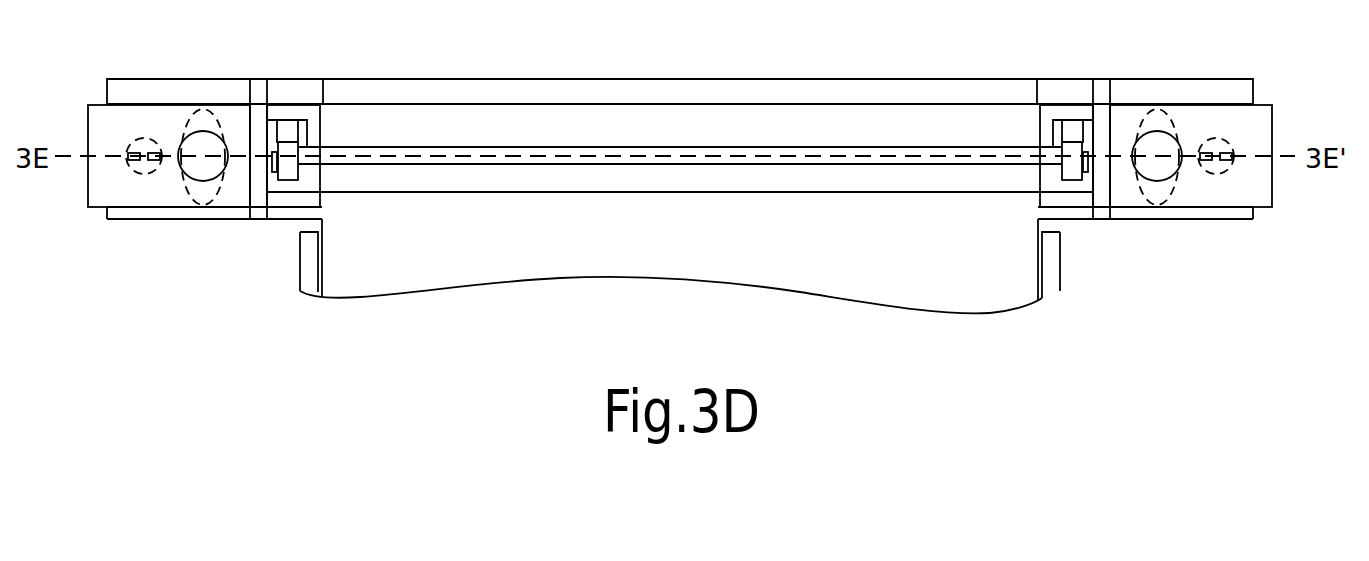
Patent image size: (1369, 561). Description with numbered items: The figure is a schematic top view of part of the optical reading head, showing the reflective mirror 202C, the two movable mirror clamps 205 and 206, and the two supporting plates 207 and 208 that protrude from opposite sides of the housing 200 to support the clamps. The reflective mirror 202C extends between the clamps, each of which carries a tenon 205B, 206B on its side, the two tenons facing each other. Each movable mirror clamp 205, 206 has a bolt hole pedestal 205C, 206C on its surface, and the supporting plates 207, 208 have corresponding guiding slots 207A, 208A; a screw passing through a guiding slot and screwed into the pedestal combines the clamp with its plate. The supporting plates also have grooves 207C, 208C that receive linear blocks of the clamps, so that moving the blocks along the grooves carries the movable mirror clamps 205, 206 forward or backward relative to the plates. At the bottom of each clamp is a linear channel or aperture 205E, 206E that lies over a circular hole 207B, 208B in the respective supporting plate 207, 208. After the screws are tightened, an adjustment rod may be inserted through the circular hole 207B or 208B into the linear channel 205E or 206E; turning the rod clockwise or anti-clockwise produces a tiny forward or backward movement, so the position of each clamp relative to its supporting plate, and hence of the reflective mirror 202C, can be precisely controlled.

The housing 200 is at (1050, 267).
The reflective mirror 202C is at (550, 178).
The movable mirror clamp 205 is at (88, 134).
The tenon 205B is at (288, 132).
The bolt hole pedestal 205C is at (200, 143).
The linear channel 205E is at (136, 146).
The movable mirror clamp 206 is at (1272, 134).
The tenon 206B is at (1072, 132).
The bolt hole pedestal 206C is at (1160, 143).
The linear channel 206E is at (1224, 146).
The supporting plate 207 is at (188, 209).
The guiding slot 207A is at (213, 198).
The circular hole 207B is at (131, 169).
The groove 207C is at (261, 87).
The supporting plate 208 is at (1172, 209).
The guiding slot 208A is at (1145, 198).
The circular hole 208B is at (1229, 169).
The groove 208C is at (1099, 87).